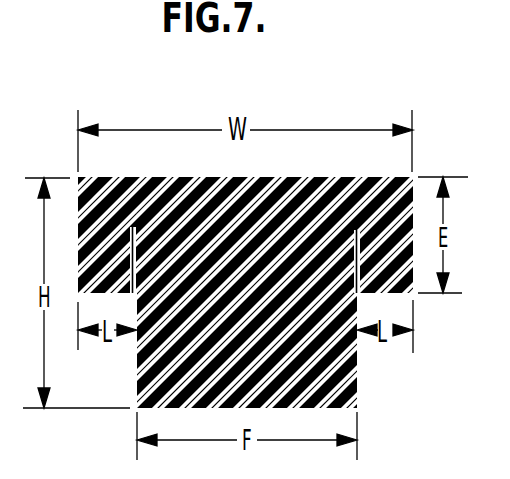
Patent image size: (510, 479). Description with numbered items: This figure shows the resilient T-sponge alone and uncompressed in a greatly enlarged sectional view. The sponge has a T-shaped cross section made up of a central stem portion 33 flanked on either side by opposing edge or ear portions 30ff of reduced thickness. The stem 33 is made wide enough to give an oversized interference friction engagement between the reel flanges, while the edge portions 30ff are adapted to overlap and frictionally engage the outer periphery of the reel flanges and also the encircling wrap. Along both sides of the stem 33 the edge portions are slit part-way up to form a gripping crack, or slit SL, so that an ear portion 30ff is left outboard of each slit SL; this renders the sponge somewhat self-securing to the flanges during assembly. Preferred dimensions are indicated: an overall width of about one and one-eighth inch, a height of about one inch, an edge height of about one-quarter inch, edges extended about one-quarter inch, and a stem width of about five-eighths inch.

The stem portion 33 is at (248, 312).
The edge portions 30ff is at (118, 275).
The slit SL is at (136, 258).